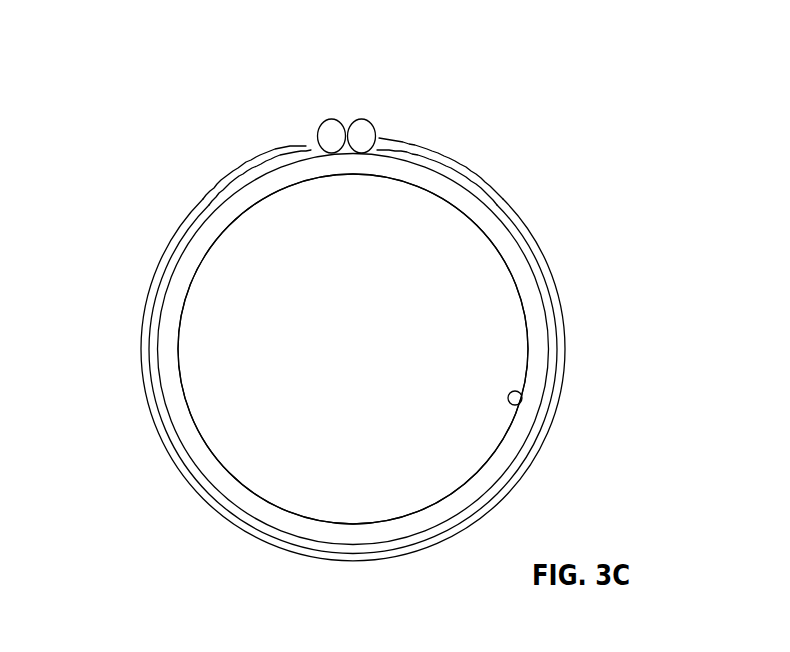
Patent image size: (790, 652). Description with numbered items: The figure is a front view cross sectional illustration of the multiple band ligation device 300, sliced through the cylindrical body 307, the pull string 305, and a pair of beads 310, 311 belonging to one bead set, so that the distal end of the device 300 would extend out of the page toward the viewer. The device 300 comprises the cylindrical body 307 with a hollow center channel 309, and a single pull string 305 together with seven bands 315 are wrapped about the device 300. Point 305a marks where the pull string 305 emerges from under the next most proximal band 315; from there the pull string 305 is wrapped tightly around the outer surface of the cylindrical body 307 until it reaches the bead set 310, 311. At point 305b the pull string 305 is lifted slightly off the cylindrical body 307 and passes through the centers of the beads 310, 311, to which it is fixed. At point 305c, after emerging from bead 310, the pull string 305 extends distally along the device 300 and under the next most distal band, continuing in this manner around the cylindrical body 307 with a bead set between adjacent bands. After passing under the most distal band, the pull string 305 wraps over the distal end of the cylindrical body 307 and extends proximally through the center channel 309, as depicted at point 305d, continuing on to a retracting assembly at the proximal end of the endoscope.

The multiple band ligation device 300 is at (168, 50).
The pull string 305 is at (173, 262).
The point where pull string emerges from under next most proximal band 305a is at (478, 191).
The point where pull string is lifted off cylindrical body 305b is at (311, 145).
The point where pull string emerges from bead 305c is at (400, 153).
The point where pull string extends through center channel 305d is at (509, 394).
The cylindrical body 307 is at (511, 458).
The hollow center channel 309 is at (247, 474).
The bead 310 is at (361, 124).
The bead 311 is at (333, 124).
The band 315 is at (548, 262).